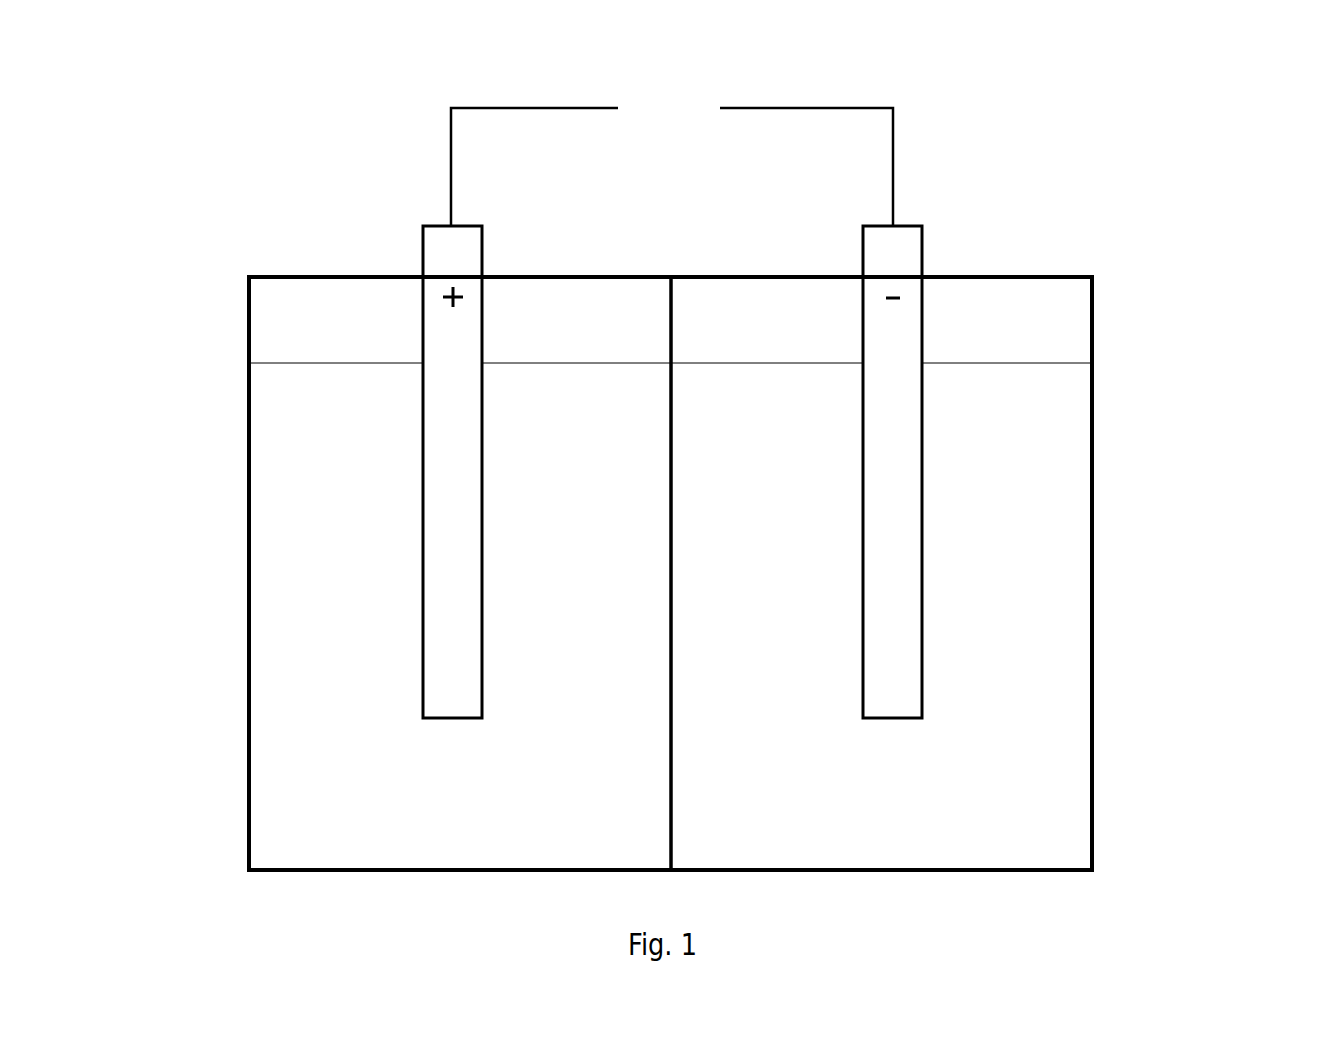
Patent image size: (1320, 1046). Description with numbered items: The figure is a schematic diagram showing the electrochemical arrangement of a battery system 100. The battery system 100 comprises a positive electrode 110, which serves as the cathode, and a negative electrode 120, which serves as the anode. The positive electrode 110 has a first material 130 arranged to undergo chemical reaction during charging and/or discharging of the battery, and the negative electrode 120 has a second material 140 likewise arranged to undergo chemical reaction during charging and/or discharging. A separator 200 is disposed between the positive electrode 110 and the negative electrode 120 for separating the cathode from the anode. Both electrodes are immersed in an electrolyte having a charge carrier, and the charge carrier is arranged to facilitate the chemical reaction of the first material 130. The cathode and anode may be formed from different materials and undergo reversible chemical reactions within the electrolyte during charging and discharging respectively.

The battery system 100 is at (702, 453).
The positive electrode 110 is at (355, 413).
The negative electrode 120 is at (983, 413).
The first material 130 is at (454, 618).
The second material 140 is at (892, 617).
The separator 200 is at (681, 717).